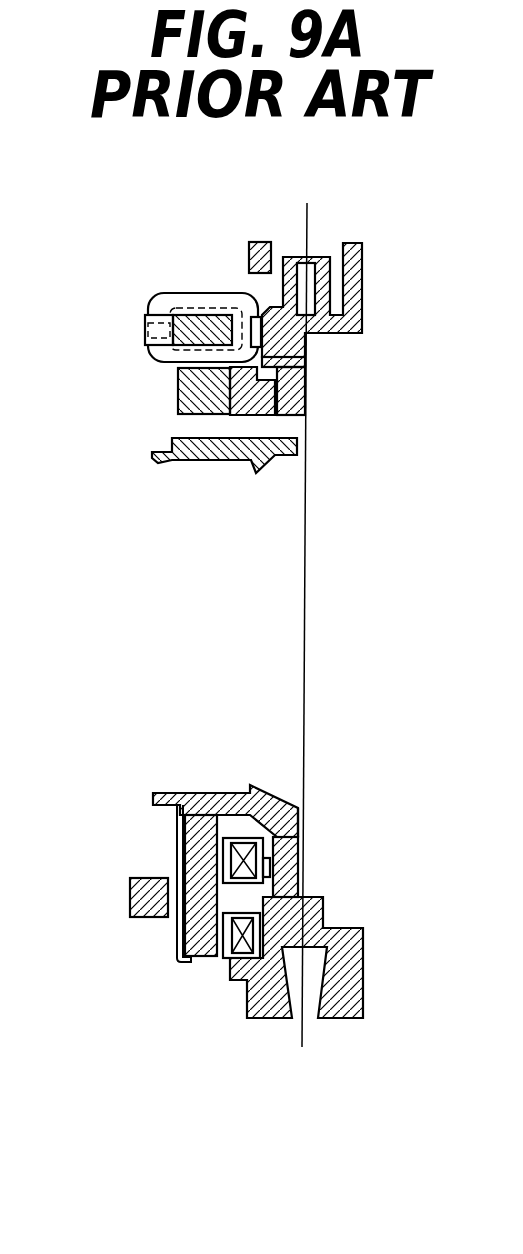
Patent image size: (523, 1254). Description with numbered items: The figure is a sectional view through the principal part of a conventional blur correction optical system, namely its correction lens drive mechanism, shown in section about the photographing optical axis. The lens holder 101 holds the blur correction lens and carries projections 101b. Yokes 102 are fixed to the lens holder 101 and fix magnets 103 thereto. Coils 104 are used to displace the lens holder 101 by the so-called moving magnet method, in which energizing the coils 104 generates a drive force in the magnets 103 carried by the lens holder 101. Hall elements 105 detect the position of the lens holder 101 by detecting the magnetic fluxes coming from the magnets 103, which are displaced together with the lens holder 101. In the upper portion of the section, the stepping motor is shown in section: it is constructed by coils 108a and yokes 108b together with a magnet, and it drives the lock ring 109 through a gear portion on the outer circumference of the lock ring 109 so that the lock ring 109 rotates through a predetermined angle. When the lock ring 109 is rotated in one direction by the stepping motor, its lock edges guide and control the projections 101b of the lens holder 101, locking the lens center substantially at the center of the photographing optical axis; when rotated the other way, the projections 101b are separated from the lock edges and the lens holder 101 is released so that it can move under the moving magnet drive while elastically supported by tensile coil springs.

The lens holder 101 is at (208, 462).
The projections 101b is at (299, 812).
The yokes 102 is at (177, 927).
The magnets 103 is at (204, 950).
The coils 104 is at (242, 952).
The Hall elements 105 is at (130, 890).
The coils 108a is at (222, 293).
The yokes 108b is at (184, 320).
The lock ring 109 is at (300, 865).